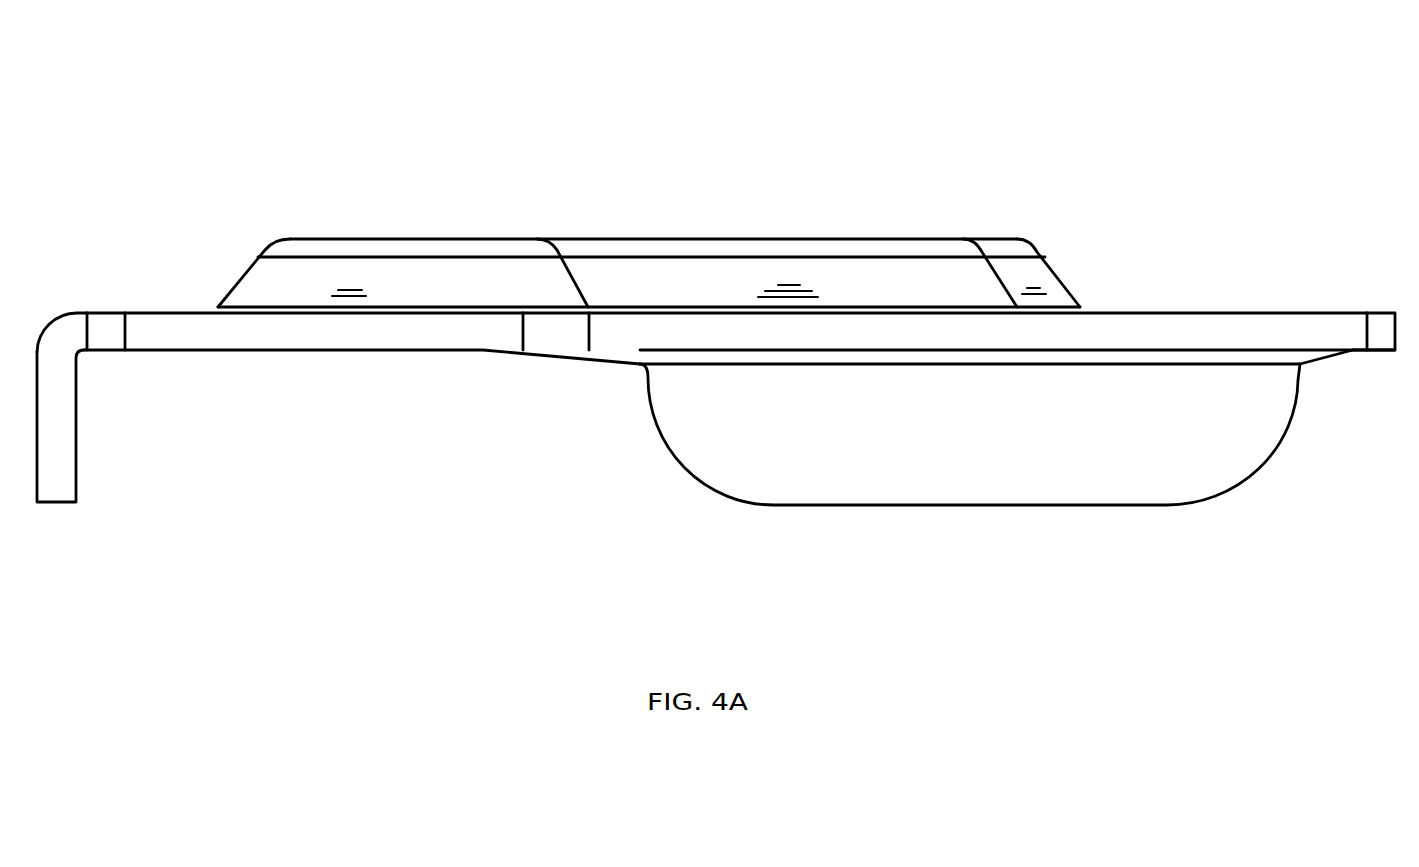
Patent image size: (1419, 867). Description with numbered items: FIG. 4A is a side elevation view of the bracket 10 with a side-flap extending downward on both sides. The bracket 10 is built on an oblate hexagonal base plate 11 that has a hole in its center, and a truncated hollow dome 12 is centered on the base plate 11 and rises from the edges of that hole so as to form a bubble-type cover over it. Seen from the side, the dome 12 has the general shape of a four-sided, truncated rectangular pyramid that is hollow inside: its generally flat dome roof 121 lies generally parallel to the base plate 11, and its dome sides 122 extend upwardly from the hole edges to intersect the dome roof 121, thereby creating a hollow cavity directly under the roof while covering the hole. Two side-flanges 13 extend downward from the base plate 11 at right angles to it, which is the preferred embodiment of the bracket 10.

The bracket 10 is at (652, 193).
The base plate 11 is at (1207, 327).
The dome 12 is at (248, 272).
The side-flange 13 is at (678, 437).
The dome roof 121 is at (882, 247).
The dome sides 122 is at (370, 277).